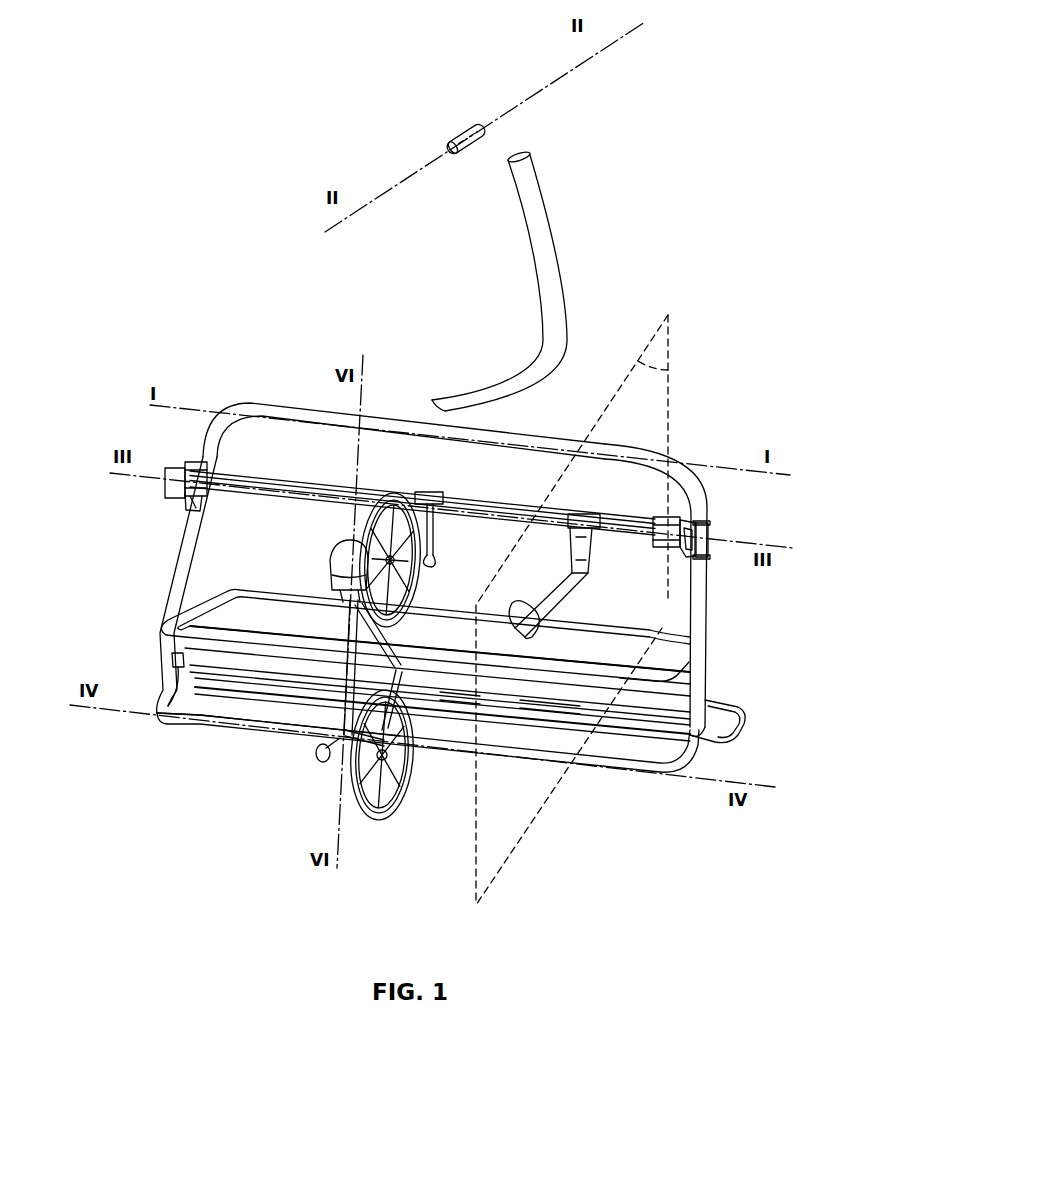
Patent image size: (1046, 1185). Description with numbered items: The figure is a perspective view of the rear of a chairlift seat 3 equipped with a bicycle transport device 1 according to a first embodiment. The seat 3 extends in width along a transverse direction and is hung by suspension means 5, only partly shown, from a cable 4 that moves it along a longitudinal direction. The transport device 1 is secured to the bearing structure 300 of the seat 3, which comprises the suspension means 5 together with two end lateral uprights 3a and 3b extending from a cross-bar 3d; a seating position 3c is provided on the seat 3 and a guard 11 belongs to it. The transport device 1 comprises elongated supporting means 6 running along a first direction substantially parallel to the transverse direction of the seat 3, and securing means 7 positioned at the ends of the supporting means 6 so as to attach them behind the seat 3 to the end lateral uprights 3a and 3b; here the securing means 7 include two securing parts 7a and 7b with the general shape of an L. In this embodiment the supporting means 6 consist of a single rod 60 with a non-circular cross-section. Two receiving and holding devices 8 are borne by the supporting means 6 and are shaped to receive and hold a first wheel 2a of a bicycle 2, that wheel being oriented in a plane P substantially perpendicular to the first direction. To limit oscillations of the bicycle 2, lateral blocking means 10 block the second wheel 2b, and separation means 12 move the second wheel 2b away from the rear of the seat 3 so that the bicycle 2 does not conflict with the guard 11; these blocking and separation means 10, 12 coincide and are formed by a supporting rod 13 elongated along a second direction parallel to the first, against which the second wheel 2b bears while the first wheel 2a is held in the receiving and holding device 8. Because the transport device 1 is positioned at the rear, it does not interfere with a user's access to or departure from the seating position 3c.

The bicycle transport device 1 is at (304, 521).
The bicycle 2 is at (348, 654).
The first wheel 2a is at (391, 493).
The second wheel 2b is at (377, 819).
The chairlift seat 3 is at (446, 538).
The end lateral upright 3a is at (706, 605).
The end lateral upright 3b is at (176, 566).
The seating position 3c is at (714, 711).
The cross-bar 3d is at (392, 412).
The cable 4 is at (467, 127).
The suspension means 5 is at (526, 289).
The supporting means 6 is at (422, 487).
The single rod 60 is at (272, 481).
The securing means 7 is at (444, 491).
The securing part 7a is at (705, 511).
The securing part 7b is at (187, 501).
The receiving and holding device 8 is at (444, 559).
The lateral blocking means 10 is at (164, 737).
The separation means 12 is at (278, 724).
The guard 11 is at (227, 591).
The supporting rod 13 is at (235, 734).
The bearing structure 300 is at (590, 333).
The plane P is at (660, 344).